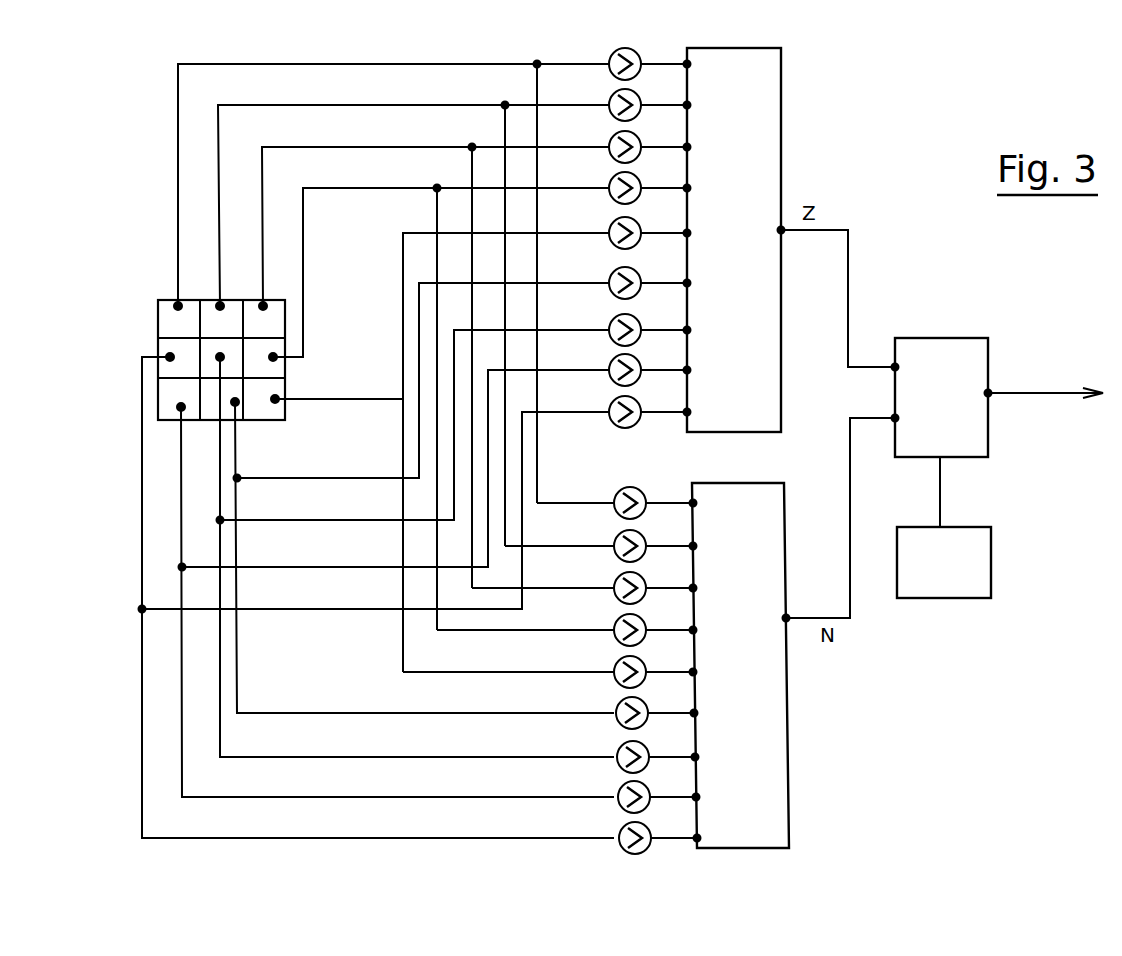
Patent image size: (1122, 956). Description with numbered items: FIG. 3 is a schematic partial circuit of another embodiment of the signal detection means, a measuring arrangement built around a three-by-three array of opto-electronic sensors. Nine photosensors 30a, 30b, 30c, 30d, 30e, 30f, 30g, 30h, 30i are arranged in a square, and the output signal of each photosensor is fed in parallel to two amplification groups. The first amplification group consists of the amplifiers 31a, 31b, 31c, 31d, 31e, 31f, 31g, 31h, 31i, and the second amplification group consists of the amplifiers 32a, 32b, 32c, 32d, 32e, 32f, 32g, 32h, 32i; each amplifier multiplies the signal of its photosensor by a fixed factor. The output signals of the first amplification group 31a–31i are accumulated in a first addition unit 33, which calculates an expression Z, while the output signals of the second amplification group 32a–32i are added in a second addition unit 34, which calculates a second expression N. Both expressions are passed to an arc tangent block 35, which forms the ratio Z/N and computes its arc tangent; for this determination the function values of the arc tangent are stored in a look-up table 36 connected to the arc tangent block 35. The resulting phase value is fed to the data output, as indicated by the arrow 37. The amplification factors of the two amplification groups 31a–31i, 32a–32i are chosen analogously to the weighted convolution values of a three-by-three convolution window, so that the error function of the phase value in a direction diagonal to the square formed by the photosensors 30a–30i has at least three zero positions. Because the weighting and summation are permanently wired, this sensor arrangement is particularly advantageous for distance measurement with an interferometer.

The photosensor 30a is at (160, 302).
The photosensor 30b is at (236, 300).
The photosensor 30c is at (277, 306).
The photosensor 30d is at (160, 342).
The photosensor 30e is at (212, 347).
The photosensor 30f is at (280, 366).
The photosensor 30g is at (173, 395).
The photosensor 30h is at (208, 418).
The photosensor 30i is at (260, 408).
The amplifier of first amplification group 31a is at (613, 52).
The amplifier of first amplification group 31b is at (613, 94).
The amplifier of first amplification group 31c is at (613, 136).
The amplifier of first amplification group 31d is at (613, 401).
The amplifier of first amplification group 31e is at (613, 319).
The amplifier of first amplification group 31f is at (613, 177).
The amplifier of first amplification group 31g is at (613, 359).
The amplifier of first amplification group 31h is at (613, 272).
The amplifier of first amplification group 31i is at (613, 222).
The amplifier of second amplification group 32a is at (618, 492).
The amplifier of second amplification group 32b is at (618, 535).
The amplifier of second amplification group 32c is at (618, 577).
The amplifier of second amplification group 32d is at (623, 827).
The amplifier of second amplification group 32e is at (621, 746).
The amplifier of second amplification group 32f is at (618, 619).
The amplifier of second amplification group 32g is at (622, 786).
The amplifier of second amplification group 32h is at (620, 702).
The amplifier of second amplification group 32i is at (618, 661).
The first addition unit 33 is at (781, 75).
The second addition unit 34 is at (788, 747).
The arc tangent block 35 is at (990, 435).
The look-up table 36 is at (991, 572).
The arrow 37 is at (1092, 396).